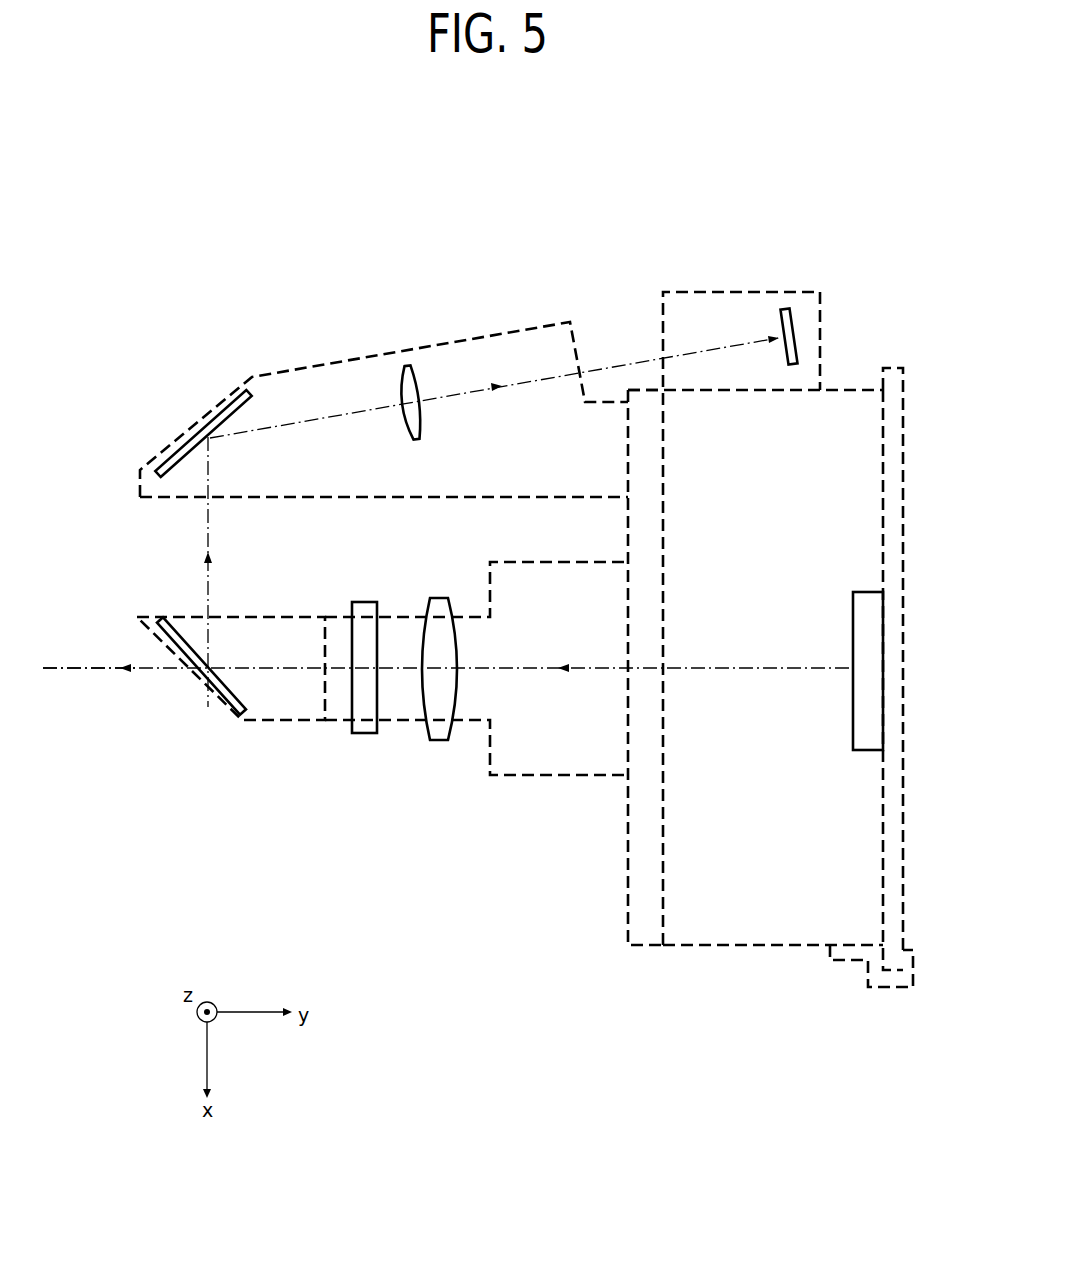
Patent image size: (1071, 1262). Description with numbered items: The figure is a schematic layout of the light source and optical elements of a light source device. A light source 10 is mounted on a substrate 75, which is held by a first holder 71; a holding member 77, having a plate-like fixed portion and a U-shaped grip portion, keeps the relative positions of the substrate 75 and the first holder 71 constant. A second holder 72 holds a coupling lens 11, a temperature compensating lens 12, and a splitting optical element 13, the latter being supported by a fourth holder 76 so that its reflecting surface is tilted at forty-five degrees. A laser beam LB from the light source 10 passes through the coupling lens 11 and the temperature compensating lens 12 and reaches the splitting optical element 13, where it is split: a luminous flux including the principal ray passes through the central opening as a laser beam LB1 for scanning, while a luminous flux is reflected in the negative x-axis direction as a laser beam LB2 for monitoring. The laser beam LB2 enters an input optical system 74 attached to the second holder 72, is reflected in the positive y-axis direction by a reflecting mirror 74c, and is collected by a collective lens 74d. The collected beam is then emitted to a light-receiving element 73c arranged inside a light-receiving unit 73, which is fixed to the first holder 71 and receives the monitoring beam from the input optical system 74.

The light source 10 is at (868, 598).
The coupling lens 11 is at (438, 732).
The temperature compensating lens 12 is at (363, 725).
The splitting optical element 13 is at (237, 693).
The first holder 71 is at (749, 962).
The second holder 72 is at (640, 962).
The light-receiving unit 73 is at (672, 276).
The light-receiving element 73c is at (784, 308).
The input optical system 74 is at (320, 338).
The reflecting mirror 74c is at (218, 413).
The collective lens 74d is at (414, 374).
The substrate 75 is at (892, 365).
The fourth holder 76 is at (280, 722).
The holding member 77 is at (892, 990).
The laser beam LB is at (265, 663).
The laser beam for scanning LB1 is at (100, 663).
The laser beam for monitoring LB2 is at (210, 502).